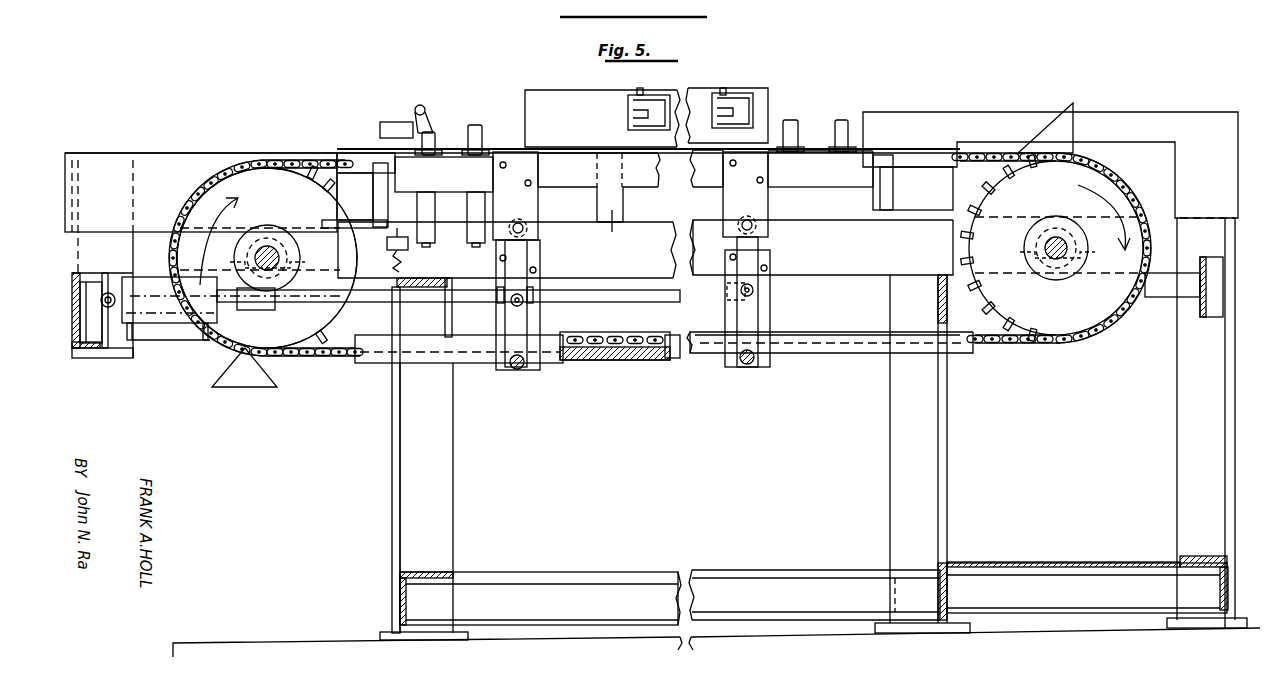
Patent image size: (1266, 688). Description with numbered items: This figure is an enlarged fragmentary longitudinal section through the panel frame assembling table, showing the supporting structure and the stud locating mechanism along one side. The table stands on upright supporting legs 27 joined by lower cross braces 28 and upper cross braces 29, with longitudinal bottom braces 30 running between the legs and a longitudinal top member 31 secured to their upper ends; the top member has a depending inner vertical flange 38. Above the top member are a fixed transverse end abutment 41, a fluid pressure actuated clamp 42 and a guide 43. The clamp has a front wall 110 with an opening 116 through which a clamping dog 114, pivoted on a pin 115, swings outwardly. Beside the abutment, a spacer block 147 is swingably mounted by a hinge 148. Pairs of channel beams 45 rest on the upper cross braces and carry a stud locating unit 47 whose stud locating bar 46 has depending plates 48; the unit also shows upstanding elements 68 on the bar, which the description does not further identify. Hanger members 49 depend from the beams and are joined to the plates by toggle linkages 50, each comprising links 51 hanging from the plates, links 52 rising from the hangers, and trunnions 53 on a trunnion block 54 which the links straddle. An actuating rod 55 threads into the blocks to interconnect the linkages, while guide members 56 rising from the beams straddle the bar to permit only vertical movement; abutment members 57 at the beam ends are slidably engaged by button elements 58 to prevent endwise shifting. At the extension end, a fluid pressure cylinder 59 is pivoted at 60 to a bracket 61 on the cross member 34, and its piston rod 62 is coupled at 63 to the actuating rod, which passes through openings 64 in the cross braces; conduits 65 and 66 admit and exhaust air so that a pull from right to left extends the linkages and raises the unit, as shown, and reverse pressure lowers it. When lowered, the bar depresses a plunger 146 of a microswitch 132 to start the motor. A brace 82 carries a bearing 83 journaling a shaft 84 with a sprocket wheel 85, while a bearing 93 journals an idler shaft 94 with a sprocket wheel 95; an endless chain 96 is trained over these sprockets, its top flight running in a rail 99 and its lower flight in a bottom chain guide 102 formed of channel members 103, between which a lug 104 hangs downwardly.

The upright supporting legs 27 is at (454, 497).
The lower cross braces 28 is at (420, 571).
The upper cross braces 29 is at (390, 322).
The longitudinal bottom braces 30 is at (735, 572).
The longitudinal top member 31 is at (224, 150).
The cross member 34 is at (92, 350).
The inner vertical flange 38 is at (158, 172).
The transverse end abutment 41 is at (432, 122).
The fluid pressure actuated clamp 42 is at (673, 89).
The guide 43 is at (1127, 116).
The beams 45 is at (645, 237).
The stud locating bar 46 is at (582, 176).
The stud locating unit 47 is at (812, 150).
The plates 48 is at (630, 196).
The hanger members 49 is at (512, 368).
The toggle linkage 50 is at (534, 288).
The links 51 is at (505, 266).
The links 52 is at (527, 330).
The trunnions 53 is at (755, 292).
The trunnion block 54 is at (500, 302).
The actuating rod 55 is at (638, 292).
The guide members 56 is at (645, 278).
The abutment members 57 is at (383, 205).
The button elements 58 is at (397, 178).
The fluid pressure cylinder 59 is at (172, 322).
The pivotal connection 60 is at (110, 292).
The bracket 61 is at (95, 312).
The piston rod 62 is at (227, 297).
The coupling 63 is at (262, 305).
The openings 64 is at (392, 322).
The conduit 65 is at (130, 340).
The conduit 66 is at (206, 341).
The clamp post 68 is at (472, 137).
The brace 82 is at (1157, 291).
The bearing 83 is at (1055, 248).
The shaft 84 is at (1062, 258).
The sprocket wheel 85 is at (1068, 325).
The bearing 93 is at (222, 266).
The idler shaft 94 is at (280, 256).
The sprocket wheel 95 is at (283, 213).
The endless chain 96 is at (1002, 347).
The rail 99 is at (357, 150).
The bottom chain guide 102 is at (623, 362).
The channel members 103 is at (662, 362).
The lug 104 is at (1058, 127).
The front wall 110 is at (553, 98).
The clamping dog 114 is at (653, 125).
The pin 115 is at (638, 89).
The opening 116 is at (630, 105).
The microswitch 132 is at (406, 253).
The plunger 146 is at (472, 230).
The spacer block 147 is at (392, 122).
The hinge 148 is at (424, 106).